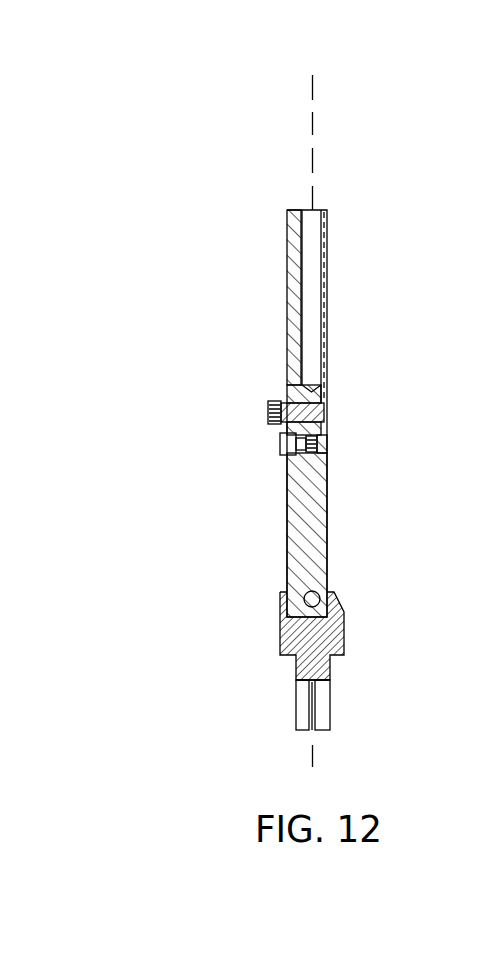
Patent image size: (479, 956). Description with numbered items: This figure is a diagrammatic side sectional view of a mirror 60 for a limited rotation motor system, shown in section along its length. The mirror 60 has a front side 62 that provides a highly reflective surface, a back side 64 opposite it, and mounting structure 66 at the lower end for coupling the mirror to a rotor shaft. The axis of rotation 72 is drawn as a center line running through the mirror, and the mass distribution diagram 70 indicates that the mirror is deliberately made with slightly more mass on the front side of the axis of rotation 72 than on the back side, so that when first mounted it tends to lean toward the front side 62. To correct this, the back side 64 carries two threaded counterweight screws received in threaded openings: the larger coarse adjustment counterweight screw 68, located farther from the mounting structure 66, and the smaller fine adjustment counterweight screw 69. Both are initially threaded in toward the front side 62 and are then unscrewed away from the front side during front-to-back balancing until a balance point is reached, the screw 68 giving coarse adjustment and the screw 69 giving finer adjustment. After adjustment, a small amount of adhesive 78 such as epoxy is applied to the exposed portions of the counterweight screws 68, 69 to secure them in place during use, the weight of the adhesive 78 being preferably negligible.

The mirror 60 is at (455, 204).
The front side 62 is at (327, 495).
The back side 64 is at (287, 266).
The mounting structure 66 is at (330, 697).
The coarse adjustment counterweight screw 68 is at (268, 411).
The fine adjustment counterweight screw 69 is at (283, 449).
The mass distribution diagram 70 is at (373, 67).
The axis of rotation 72 is at (309, 94).
The adhesive 78 is at (282, 440).